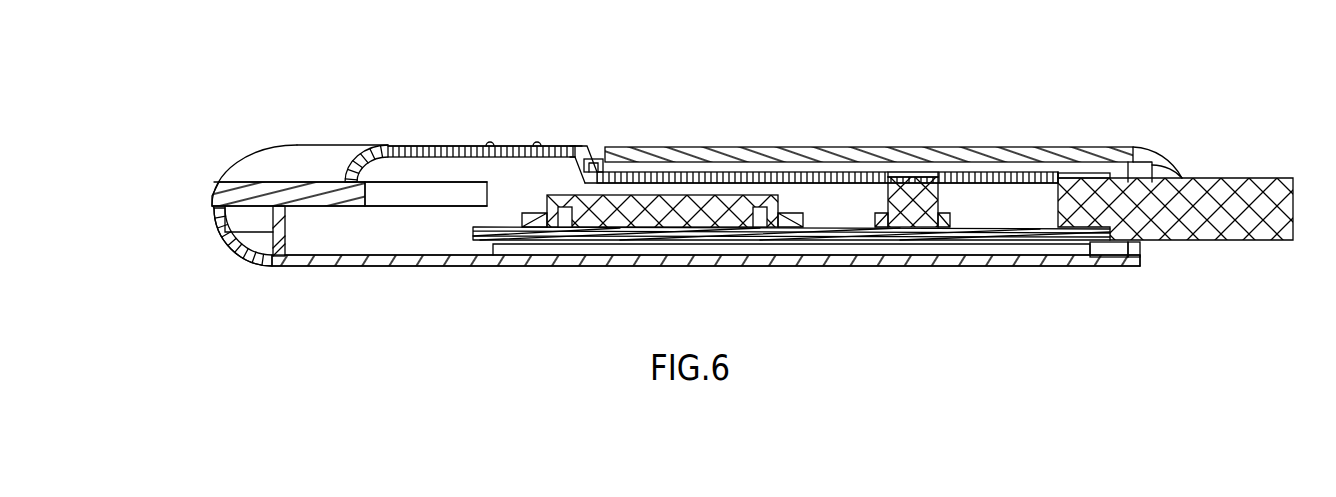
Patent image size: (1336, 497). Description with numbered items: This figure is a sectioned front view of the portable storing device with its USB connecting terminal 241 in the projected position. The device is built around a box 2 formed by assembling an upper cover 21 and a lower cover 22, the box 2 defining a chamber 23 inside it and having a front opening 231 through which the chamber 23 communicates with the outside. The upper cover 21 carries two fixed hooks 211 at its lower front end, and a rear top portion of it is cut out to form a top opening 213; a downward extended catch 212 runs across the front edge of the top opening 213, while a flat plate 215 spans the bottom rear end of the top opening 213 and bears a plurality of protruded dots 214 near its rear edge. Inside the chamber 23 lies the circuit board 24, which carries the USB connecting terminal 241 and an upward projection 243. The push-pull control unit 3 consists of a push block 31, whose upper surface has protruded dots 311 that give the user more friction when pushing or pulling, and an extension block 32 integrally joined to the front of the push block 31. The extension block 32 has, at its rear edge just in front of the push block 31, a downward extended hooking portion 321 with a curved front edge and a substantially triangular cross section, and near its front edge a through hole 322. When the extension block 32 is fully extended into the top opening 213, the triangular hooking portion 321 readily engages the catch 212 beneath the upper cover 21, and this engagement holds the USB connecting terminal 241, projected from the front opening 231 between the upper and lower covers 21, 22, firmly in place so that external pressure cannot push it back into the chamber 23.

The box 2 is at (1030, 292).
The upper cover 21 is at (962, 158).
The fixed hooks 211 is at (1138, 250).
The catch 212 is at (582, 150).
The top opening 213 is at (398, 192).
The protruded dots 214 is at (236, 172).
The flat plate 215 is at (295, 145).
The lower cover 22 is at (1048, 267).
The chamber 23 is at (1057, 169).
The front opening 231 is at (1138, 248).
The circuit board 24 is at (920, 233).
The USB connecting terminal 241 is at (1240, 183).
The upward projection 243 is at (913, 218).
The push-pull control unit 3 is at (480, 102).
The push block 31 is at (478, 146).
The protruded dots 311 is at (375, 147).
The extension block 32 is at (772, 178).
The hooking portion 321 is at (597, 170).
The through hole 322 is at (903, 177).